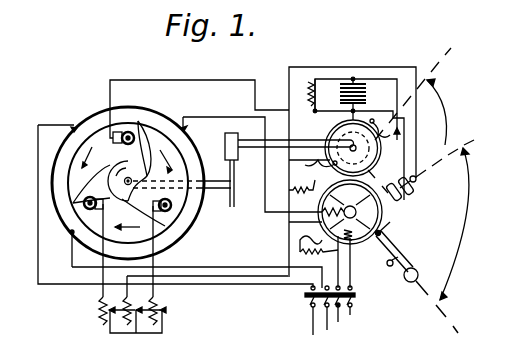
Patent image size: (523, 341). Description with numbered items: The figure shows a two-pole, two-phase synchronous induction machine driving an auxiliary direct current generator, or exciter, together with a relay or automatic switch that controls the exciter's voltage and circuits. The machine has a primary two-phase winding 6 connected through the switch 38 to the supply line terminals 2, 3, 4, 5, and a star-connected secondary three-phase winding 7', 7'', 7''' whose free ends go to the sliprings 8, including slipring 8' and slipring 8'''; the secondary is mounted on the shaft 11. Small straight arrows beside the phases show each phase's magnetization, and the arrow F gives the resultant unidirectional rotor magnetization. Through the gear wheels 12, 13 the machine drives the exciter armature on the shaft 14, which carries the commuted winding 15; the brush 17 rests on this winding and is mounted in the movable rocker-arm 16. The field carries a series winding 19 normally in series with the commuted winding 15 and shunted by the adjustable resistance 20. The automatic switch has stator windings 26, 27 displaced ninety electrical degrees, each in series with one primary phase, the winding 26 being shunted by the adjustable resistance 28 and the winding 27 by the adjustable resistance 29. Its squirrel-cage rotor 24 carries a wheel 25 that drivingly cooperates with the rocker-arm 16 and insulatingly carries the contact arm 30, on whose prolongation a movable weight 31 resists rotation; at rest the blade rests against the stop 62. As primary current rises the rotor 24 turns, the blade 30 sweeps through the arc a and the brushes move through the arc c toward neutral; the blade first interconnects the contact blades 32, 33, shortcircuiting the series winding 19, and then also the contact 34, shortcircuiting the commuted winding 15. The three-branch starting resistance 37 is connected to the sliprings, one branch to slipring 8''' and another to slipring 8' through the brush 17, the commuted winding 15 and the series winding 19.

The primary two-phase winding 6 is at (92, 112).
The secondary phase winding 7' is at (57, 135).
The secondary phase winding 7'' is at (57, 246).
The secondary phase winding 7''' is at (200, 132).
The sliprings 8 is at (93, 212).
The slipring 8' is at (127, 146).
The slipring 8''' is at (122, 175).
The shaft 11 is at (228, 192).
The gear wheel 12 is at (237, 190).
The gear wheel 13 is at (235, 133).
The shaft 14 is at (281, 140).
The commuted winding 15 is at (332, 127).
The movable rocker-arm 16 is at (372, 150).
The brush 17 is at (313, 169).
The series winding 19 is at (373, 85).
The adjustable resistance 20 is at (304, 96).
The rotor 24 is at (357, 213).
The wheel 25 is at (384, 233).
The energizing winding 26 is at (320, 220).
The energizing winding 27 is at (352, 241).
The adjustable resistance 28 is at (297, 190).
The adjustable resistance 29 is at (319, 253).
The contact arm 30 is at (398, 253).
The weight 31 is at (409, 284).
The contact blade 32 is at (392, 198).
The contact blade 33 is at (411, 189).
The contact 34 is at (416, 176).
The starting resistance 37 is at (142, 315).
The switch 38 is at (317, 297).
The stop 62 is at (389, 266).
The arrow F is at (150, 141).
The arc c is at (414, 96).
The arc a is at (455, 224).
The line phase 2 is at (312, 324).
The line phase 3 is at (325, 324).
The line phase 4 is at (338, 321).
The line phase 5 is at (353, 318).